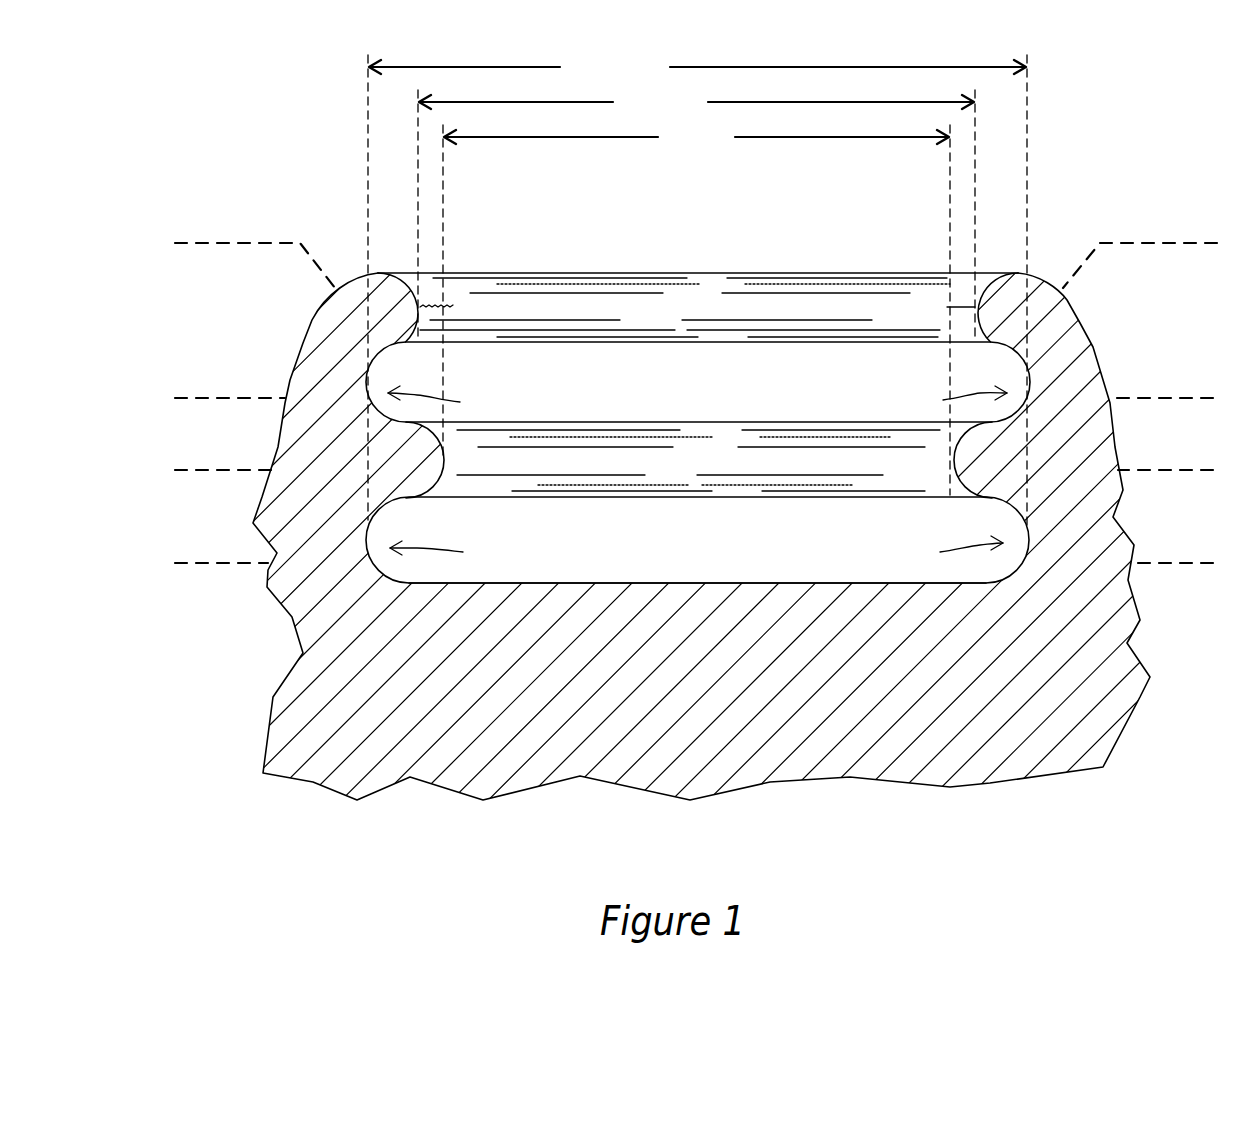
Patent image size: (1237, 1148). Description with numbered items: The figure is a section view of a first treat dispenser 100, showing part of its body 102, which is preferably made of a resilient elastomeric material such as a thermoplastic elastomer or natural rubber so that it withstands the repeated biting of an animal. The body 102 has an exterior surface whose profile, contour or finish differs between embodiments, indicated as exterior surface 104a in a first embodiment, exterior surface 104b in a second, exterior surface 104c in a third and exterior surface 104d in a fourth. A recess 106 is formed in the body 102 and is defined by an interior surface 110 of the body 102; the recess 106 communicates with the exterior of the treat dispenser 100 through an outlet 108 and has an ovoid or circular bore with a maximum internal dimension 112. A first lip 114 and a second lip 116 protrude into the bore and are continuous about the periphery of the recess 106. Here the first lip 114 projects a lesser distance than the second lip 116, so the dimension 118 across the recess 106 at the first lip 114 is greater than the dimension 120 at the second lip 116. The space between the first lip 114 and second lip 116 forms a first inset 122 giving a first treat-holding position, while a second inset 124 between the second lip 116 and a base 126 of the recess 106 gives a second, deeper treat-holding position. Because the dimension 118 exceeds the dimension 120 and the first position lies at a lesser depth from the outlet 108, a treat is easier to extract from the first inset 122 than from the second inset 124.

The treat dispenser 100 is at (1093, 125).
The body 102 is at (1140, 710).
The exterior surface 104a is at (252, 242).
The exterior surface 104b is at (252, 398).
The exterior surface 104c is at (248, 468).
The exterior surface 104d is at (255, 563).
The recess 106 is at (712, 292).
The outlet 108 is at (863, 272).
The interior surface 110 is at (933, 360).
The maximum internal dimension 112 is at (697, 290).
The first lip 114 is at (413, 342).
The second lip 116 is at (450, 497).
The dimension 118 is at (696, 216).
The dimension 120 is at (696, 310).
The first inset 122 is at (697, 400).
The second inset 124 is at (696, 551).
The base 126 is at (765, 583).